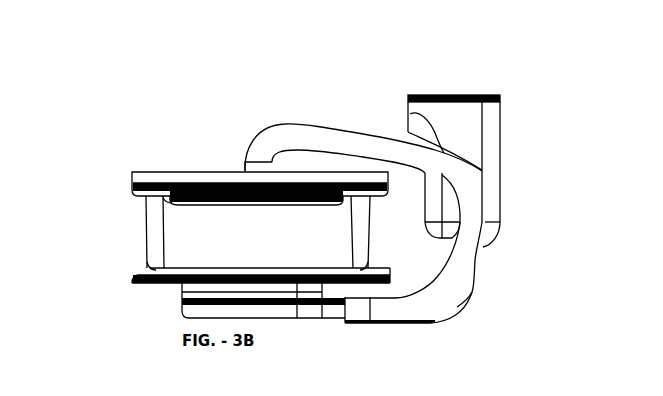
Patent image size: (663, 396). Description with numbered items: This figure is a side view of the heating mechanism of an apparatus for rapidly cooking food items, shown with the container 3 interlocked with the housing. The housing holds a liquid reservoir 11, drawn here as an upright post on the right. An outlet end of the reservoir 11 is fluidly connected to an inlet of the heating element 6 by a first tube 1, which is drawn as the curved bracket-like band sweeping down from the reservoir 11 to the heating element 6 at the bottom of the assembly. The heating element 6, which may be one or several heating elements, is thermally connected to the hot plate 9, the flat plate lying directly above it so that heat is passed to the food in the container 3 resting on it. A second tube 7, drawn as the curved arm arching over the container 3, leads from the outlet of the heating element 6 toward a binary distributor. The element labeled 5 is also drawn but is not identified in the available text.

The first tube 1 is at (465, 305).
The container 3 is at (8, 0).
The top plate 5 is at (186, 190).
The heating element 6 is at (255, 317).
The second tube 7 is at (305, 133).
The hot plate 9 is at (130, 280).
The liquid reservoir 11 is at (462, 122).